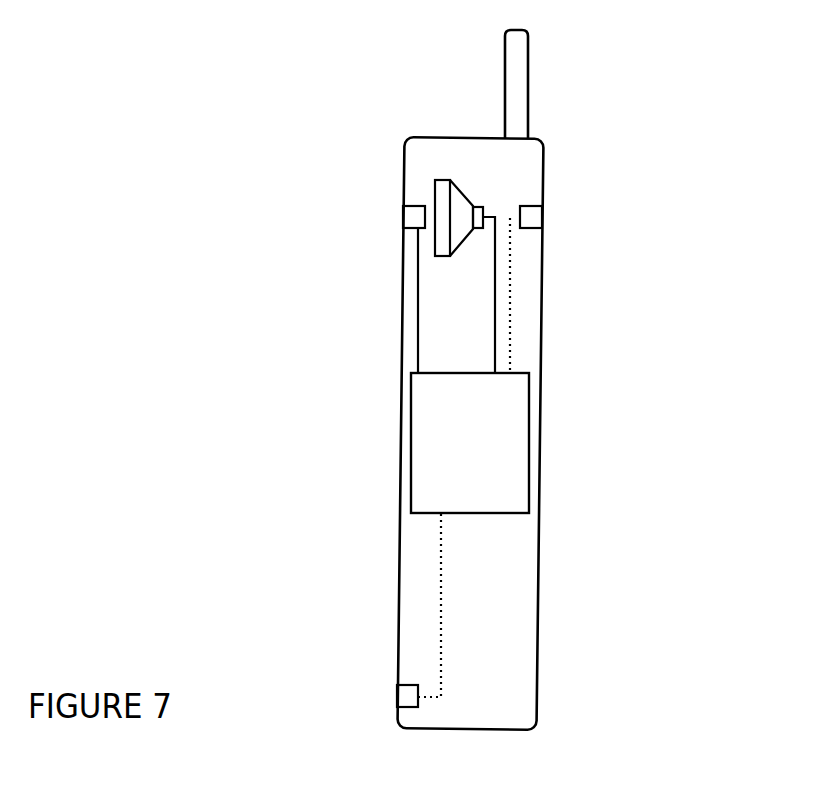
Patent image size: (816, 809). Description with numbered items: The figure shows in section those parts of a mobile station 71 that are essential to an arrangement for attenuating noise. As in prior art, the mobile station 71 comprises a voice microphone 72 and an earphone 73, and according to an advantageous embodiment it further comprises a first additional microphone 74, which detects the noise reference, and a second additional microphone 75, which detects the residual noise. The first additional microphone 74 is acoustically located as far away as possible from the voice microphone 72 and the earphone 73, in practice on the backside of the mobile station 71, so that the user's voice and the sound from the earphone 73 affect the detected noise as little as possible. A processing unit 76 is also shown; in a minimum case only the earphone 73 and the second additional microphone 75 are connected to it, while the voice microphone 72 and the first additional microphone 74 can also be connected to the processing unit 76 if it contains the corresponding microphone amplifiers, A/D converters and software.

The mobile station 71 is at (405, 138).
The voice microphone 72 is at (397, 692).
The earphone 73 is at (449, 180).
The first additional microphone 74 is at (547, 213).
The second additional microphone 75 is at (402, 211).
The processing unit 76 is at (411, 372).